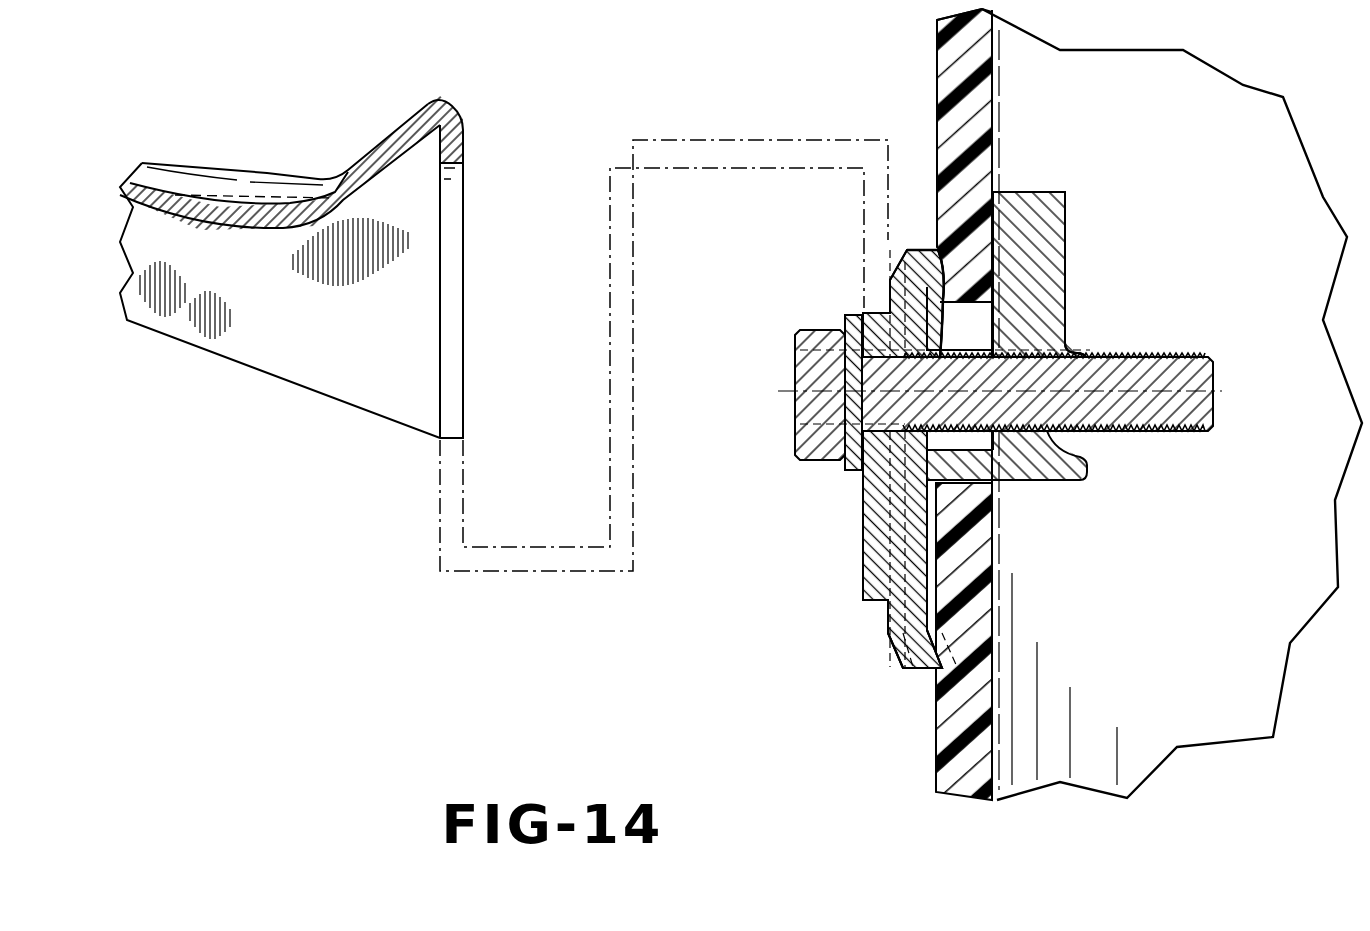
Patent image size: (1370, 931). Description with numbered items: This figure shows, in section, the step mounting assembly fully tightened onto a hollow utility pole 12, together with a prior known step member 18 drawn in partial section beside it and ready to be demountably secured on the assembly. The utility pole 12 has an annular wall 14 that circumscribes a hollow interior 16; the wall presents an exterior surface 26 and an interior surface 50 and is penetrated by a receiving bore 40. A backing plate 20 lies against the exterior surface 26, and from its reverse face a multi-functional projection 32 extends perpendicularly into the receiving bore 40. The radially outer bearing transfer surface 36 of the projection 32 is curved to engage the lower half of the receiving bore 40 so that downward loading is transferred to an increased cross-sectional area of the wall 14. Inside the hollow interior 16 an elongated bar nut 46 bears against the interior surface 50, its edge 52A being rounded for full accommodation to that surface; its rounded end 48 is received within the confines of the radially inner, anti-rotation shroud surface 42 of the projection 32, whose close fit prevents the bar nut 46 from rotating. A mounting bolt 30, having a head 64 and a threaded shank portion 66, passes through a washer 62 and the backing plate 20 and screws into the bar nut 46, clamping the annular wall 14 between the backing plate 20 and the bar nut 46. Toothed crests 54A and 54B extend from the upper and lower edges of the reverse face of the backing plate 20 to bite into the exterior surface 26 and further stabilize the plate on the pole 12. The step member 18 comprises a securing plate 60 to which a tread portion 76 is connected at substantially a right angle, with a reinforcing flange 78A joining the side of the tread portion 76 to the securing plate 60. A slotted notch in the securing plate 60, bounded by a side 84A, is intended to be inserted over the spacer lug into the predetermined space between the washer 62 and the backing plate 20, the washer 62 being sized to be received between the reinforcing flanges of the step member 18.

The utility pole 12 is at (922, 764).
The annular wall 14 is at (960, 78).
The hollow interior 16 is at (1222, 158).
The step member 18 is at (262, 165).
The backing plate 20 is at (848, 605).
The exterior surface 26 is at (937, 30).
The mounting bolt 30 is at (790, 325).
The multi-functional projection 32 is at (1083, 478).
The radially outer bearing transfer surface 36 is at (1013, 486).
The receiving bore 40 is at (965, 335).
The anti-rotation shroud surface 42 is at (1073, 441).
The elongated bar nut 46 is at (1078, 240).
The rounded end 48 is at (1060, 458).
The interior surface 50 is at (993, 97).
The edge of bar nut 52A is at (1005, 192).
The toothed crest 54A is at (940, 247).
The toothed crest 54B is at (935, 672).
The securing plate 60 is at (450, 137).
The washer 62 is at (852, 474).
The head 64 is at (800, 442).
The threaded shank portion 66 is at (1180, 377).
The tread portion 76 is at (165, 163).
The reinforcing flange 78A is at (267, 335).
The side of slotted notch 84A is at (443, 243).